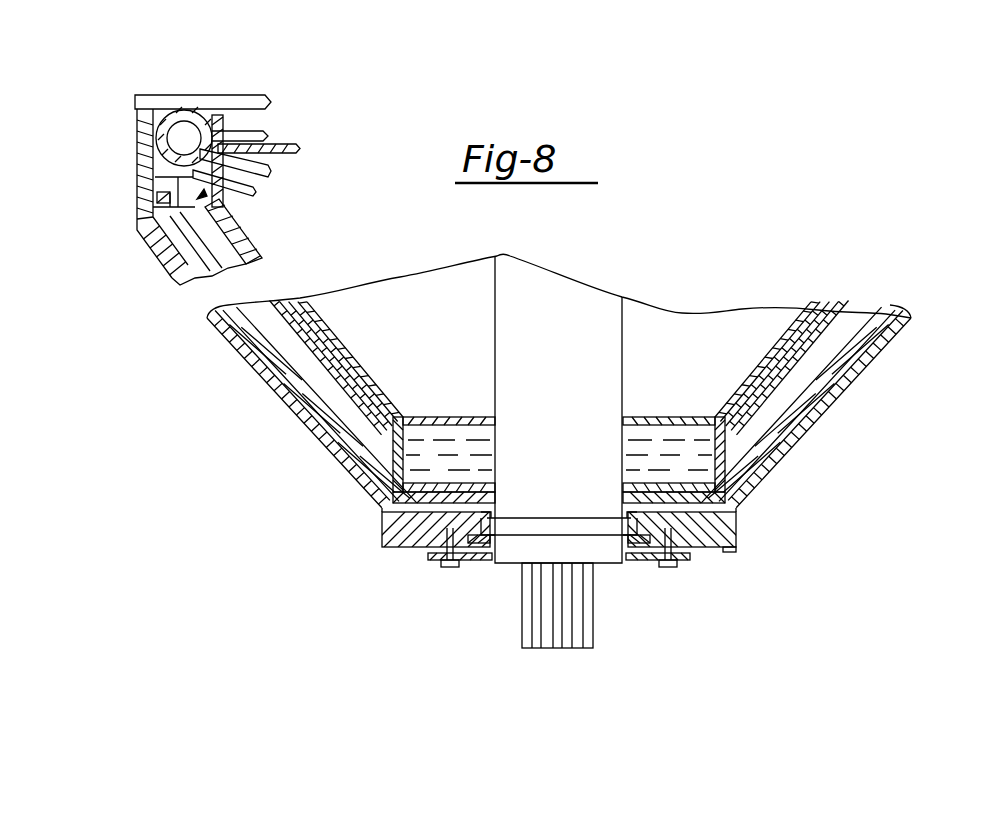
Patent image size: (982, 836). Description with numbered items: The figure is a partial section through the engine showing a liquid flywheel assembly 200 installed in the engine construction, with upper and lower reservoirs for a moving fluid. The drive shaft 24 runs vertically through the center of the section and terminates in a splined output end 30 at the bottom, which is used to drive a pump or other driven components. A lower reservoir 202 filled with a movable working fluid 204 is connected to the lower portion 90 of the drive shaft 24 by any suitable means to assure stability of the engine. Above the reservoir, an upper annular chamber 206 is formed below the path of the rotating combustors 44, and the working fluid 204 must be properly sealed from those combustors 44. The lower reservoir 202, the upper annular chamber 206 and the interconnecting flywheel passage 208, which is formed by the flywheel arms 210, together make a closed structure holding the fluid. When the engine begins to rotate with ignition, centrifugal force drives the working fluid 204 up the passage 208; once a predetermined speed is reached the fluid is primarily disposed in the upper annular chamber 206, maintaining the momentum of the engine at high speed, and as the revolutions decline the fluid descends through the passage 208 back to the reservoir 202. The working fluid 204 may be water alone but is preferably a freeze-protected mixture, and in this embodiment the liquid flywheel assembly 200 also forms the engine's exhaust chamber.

The drive shaft 24 is at (495, 330).
The splined output end 30 is at (596, 630).
The rotating combustors 44 is at (187, 120).
The lower portion of drive shaft 90 is at (580, 372).
The liquid flywheel assembly 200 is at (830, 434).
The lower reservoir 202 is at (672, 417).
The working fluid 204 is at (698, 462).
The upper annular chamber 206 is at (190, 204).
The flywheel passage 208 is at (362, 340).
The flywheel arms 210 is at (352, 352).